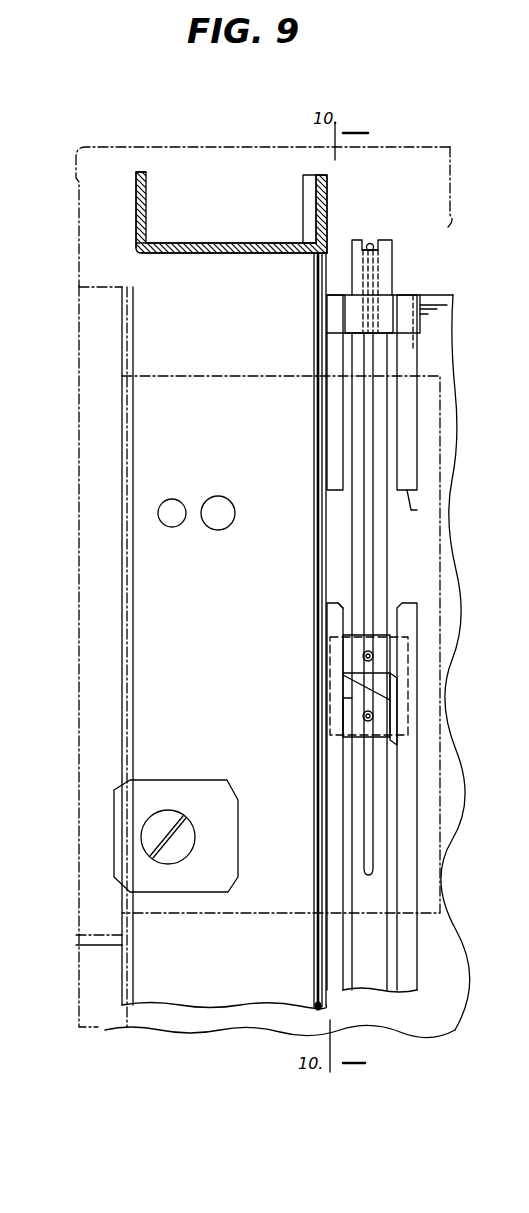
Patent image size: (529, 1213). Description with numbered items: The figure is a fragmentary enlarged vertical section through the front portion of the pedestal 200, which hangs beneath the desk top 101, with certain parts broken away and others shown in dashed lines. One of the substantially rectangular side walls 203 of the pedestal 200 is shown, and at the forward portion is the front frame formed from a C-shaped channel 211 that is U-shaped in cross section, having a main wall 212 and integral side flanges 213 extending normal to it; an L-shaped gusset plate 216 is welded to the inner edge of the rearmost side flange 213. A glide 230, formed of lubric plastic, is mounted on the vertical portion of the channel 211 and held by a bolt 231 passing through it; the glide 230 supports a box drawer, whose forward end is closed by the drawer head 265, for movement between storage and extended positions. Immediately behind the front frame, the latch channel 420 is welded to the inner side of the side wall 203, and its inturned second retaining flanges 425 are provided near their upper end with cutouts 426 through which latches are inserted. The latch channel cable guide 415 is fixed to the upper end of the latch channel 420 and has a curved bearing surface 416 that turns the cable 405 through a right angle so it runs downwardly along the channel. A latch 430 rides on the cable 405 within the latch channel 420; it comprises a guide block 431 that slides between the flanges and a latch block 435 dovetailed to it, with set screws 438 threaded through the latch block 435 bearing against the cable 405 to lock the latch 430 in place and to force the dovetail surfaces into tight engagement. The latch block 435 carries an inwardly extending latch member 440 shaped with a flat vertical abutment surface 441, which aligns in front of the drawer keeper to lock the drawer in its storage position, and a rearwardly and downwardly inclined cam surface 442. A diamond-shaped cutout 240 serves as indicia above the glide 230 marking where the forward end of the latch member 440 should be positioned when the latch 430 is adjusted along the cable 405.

The desk top 101 is at (85, 138).
The pedestal 200 is at (76, 400).
The side wall 203 is at (214, 375).
The C-shaped channel 211 is at (172, 234).
The main wall 212 is at (204, 243).
The side flange 213 is at (136, 194).
The L-shaped gusset plate 216 is at (304, 190).
The glide 230 is at (160, 790).
The bolt 231 is at (157, 832).
The diamond-shaped cutout 240 is at (292, 677).
The drawer head 265 is at (74, 491).
The cable 405 is at (369, 243).
The latch channel cable guide 415 is at (391, 268).
The curved bearing surface 416 is at (375, 245).
The latch channel 420 is at (424, 350).
The second retaining flange 425 is at (342, 349).
The cutout 426 is at (409, 510).
The latch 430 is at (391, 633).
The guide block 431 is at (345, 660).
The latch block 435 is at (340, 722).
The set screw 438 is at (363, 655).
The latch member 440 is at (391, 681).
The abutment surface 441 is at (350, 688).
The cam surface 442 is at (350, 703).